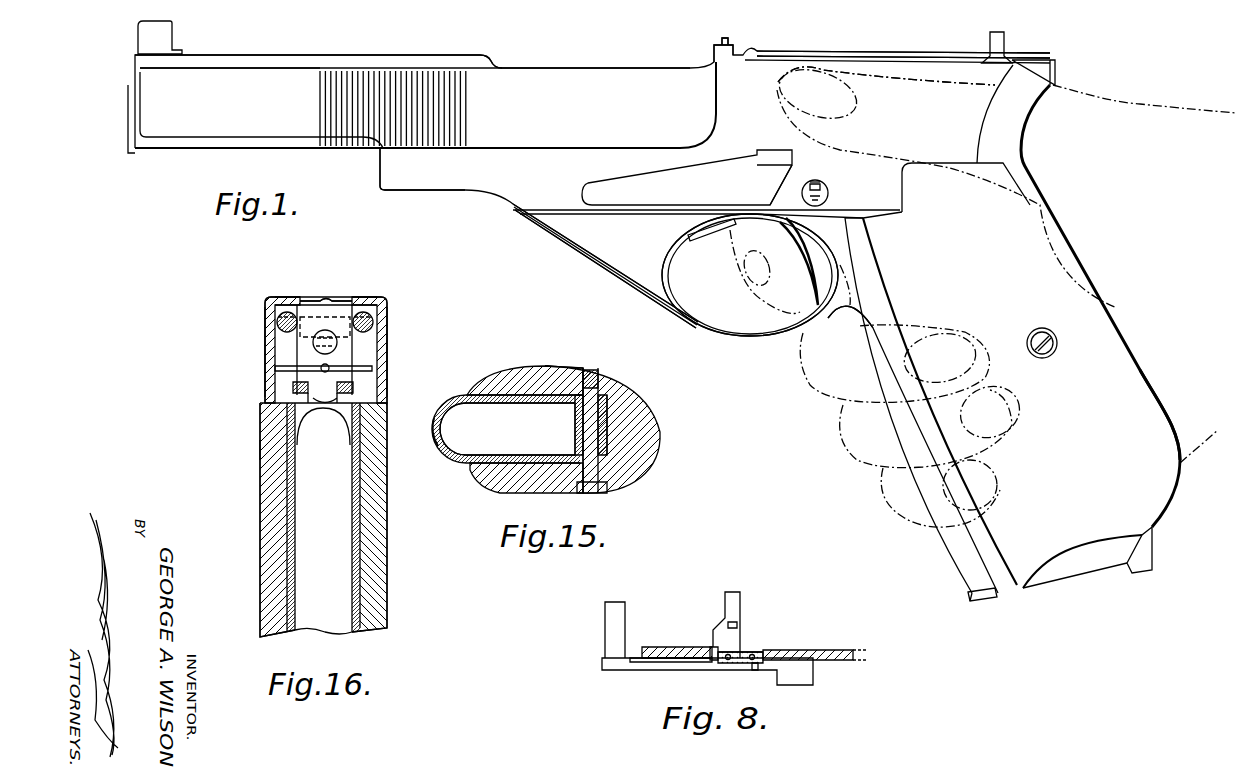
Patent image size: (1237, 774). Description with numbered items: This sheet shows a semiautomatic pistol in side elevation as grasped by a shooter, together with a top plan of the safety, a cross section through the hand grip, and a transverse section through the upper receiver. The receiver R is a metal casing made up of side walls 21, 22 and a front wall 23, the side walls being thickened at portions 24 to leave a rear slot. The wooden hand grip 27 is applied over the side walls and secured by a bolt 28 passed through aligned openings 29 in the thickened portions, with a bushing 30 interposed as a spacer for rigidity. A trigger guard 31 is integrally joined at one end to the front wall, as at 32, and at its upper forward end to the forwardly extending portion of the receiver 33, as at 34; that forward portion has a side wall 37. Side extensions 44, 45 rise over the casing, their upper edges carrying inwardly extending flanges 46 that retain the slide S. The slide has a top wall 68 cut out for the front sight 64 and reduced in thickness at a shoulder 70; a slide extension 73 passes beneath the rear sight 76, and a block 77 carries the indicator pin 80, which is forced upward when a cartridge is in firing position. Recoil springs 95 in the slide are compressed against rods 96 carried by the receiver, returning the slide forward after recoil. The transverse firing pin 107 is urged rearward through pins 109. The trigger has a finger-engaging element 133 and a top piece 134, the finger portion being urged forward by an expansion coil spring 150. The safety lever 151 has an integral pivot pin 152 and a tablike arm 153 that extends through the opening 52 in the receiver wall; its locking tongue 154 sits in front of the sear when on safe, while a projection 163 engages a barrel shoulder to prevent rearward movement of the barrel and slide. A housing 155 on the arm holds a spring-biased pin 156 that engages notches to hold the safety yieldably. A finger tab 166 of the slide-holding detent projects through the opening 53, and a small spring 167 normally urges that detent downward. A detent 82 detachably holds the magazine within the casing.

In FIG. 1, the sight 64 is at (138, 36).
In FIG. 1, the top wall 68 is at (232, 56).
In FIG. 1, the slide S is at (403, 46).
In FIG. 1, the shoulder 70 is at (482, 58).
In FIG. 1, the block 77 is at (708, 62).
In FIG. 1, the indicator pin 80 is at (751, 33).
In FIG. 1, the side extension 45 is at (892, 77).
In FIG. 16, the side extension 45 is at (266, 353).
In FIG. 1, the slide extension 73 is at (948, 47).
In FIG. 16, the slide extension 73 is at (326, 300).
In FIG. 1, the rear sight 76 is at (1004, 42).
In FIG. 1, the forwardly extending portion of the receiver 33 is at (380, 188).
In FIG. 1, the side wall 37 is at (436, 192).
In FIG. 8, the side wall 37 is at (850, 652).
In FIG. 1, the safety lever 151 is at (650, 180).
In FIG. 8, the safety lever 151 is at (674, 670).
In FIG. 1, the opening 53 is at (828, 190).
In FIG. 1, the expansion coil spring 167 is at (826, 172).
In FIG. 1, the finger tab 166 is at (800, 195).
In FIG. 1, the expansion coil spring 150 is at (845, 223).
In FIG. 1, the joint 34 is at (600, 248).
In FIG. 1, the top piece 134 is at (697, 238).
In FIG. 1, the finger-engaging element 133 is at (807, 284).
In FIG. 1, the trigger guard 31 is at (740, 333).
In FIG. 1, the joint 32 is at (847, 310).
In FIG. 1, the bolt 28 is at (1053, 346).
In FIG. 15, the bolt 28 is at (592, 370).
In FIG. 1, the hand grip 27 is at (1140, 374).
In FIG. 15, the hand grip 27 is at (661, 432).
In FIG. 1, the detent 82 is at (1150, 562).
In FIG. 1, the receiver R is at (946, 557).
In FIG. 16, the receiver R is at (242, 449).
In FIG. 16, the flanges 46 is at (300, 297).
In FIG. 16, the recoil springs 95 is at (270, 316).
In FIG. 16, the rods 96 is at (277, 323).
In FIG. 16, the side extension 44 is at (388, 353).
In FIG. 16, the pins 109 is at (288, 378).
In FIG. 16, the firing pin 107 is at (373, 377).
In FIG. 16, the side wall 21 is at (295, 634).
In FIG. 15, the side wall 21 is at (490, 397).
In FIG. 16, the side wall 22 is at (355, 629).
In FIG. 15, the side wall 22 is at (505, 456).
In FIG. 15, the thickened portions 24 is at (622, 398).
In FIG. 15, the openings 29 is at (640, 458).
In FIG. 15, the front wall 23 is at (434, 442).
In FIG. 15, the bushing 30 is at (578, 432).
In FIG. 8, the pivot pin 152 is at (606, 630).
In FIG. 8, the opening 52 is at (712, 647).
In FIG. 8, the locking tongue 154 is at (738, 606).
In FIG. 8, the projection 163 is at (740, 624).
In FIG. 8, the tablike arm 153 is at (742, 652).
In FIG. 8, the housing 155 is at (756, 652).
In FIG. 8, the spring-biased pin 156 is at (755, 670).